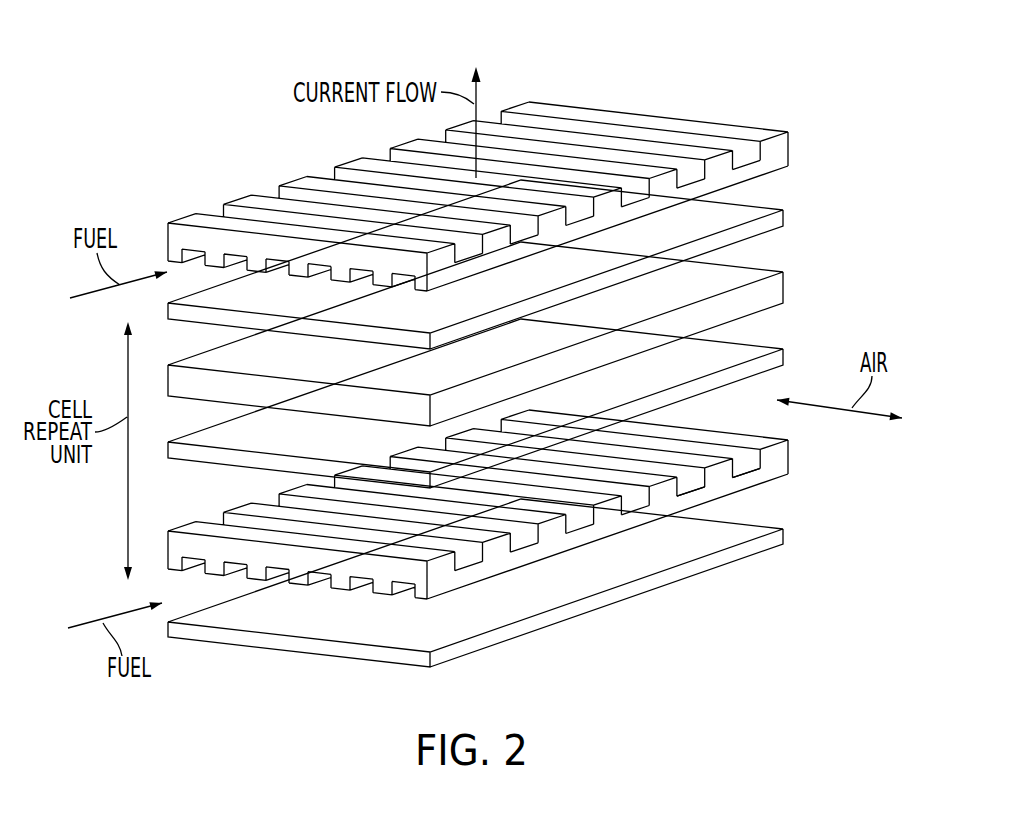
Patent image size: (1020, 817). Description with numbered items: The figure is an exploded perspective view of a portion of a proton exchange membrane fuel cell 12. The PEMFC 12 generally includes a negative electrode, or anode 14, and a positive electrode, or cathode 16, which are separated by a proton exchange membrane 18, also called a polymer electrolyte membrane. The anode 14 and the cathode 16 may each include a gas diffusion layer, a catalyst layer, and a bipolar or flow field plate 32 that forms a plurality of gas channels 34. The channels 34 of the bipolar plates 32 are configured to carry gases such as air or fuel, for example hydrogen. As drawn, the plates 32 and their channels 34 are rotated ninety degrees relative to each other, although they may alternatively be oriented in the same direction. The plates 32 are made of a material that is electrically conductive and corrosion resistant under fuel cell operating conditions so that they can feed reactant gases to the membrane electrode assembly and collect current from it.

The proton exchange membrane fuel cell 12 is at (255, 95).
The bipolar or flow field plate 32 is at (783, 153).
The negative electrode (anode) 14 is at (784, 221).
The proton exchange membrane 18 is at (784, 290).
The positive electrode (cathode) 16 is at (784, 360).
The gas channels 34 is at (753, 468).